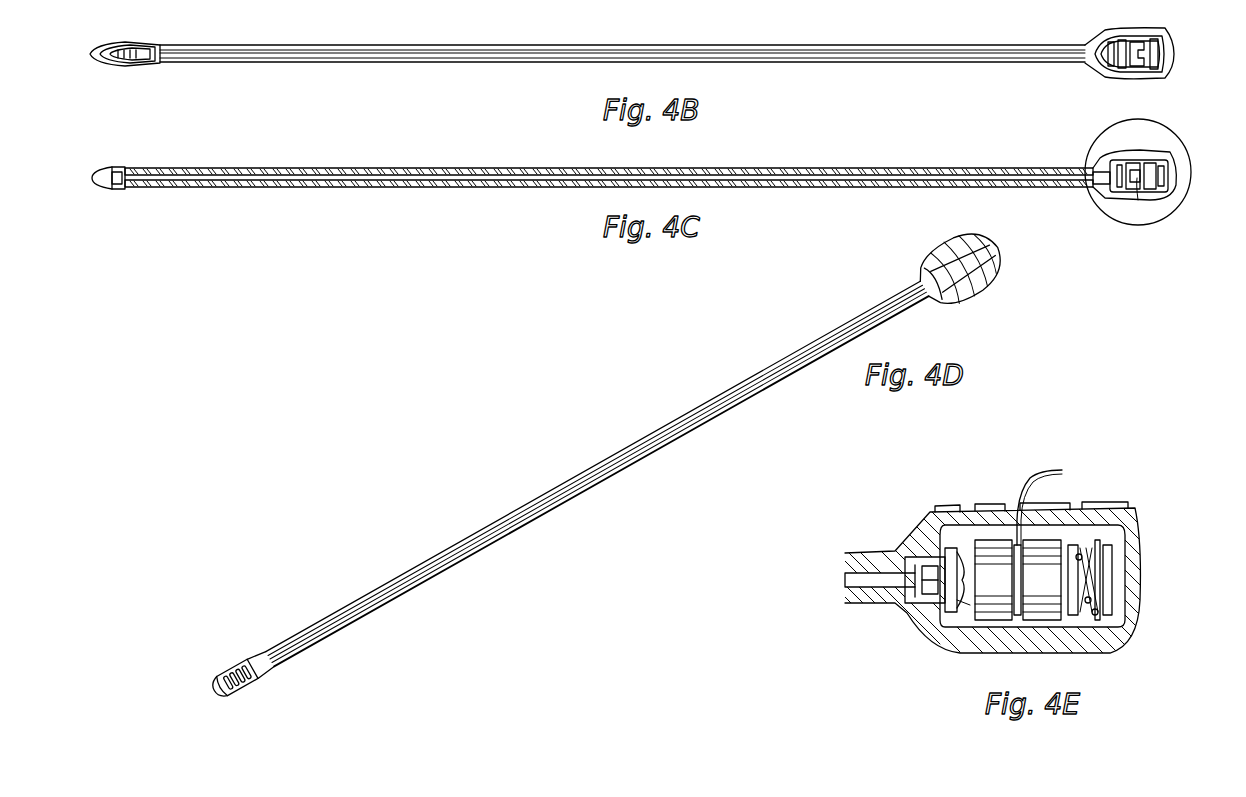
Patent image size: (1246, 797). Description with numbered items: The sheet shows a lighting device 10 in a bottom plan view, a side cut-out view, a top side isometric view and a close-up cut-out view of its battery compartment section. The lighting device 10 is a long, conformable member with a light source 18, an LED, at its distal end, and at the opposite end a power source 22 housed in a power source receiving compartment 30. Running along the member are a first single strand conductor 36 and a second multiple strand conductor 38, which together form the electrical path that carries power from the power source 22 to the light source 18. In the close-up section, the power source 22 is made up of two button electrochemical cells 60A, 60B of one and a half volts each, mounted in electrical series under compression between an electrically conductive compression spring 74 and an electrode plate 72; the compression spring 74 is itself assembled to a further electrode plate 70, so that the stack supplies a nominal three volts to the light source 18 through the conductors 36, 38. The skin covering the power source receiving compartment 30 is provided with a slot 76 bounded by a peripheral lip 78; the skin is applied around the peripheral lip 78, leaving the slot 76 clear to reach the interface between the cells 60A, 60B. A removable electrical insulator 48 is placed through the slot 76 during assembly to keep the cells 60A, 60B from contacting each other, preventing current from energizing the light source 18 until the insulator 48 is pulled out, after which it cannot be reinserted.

In FIG. 4B, the lighting device 10 is at (392, 36).
In FIG. 4C, the lighting device 10 is at (392, 150).
In FIG. 4D, the lighting device 10 is at (478, 524).
In FIG. 4B, the removable electrical insulator 48 is at (1140, 50).
In FIG. 4C, the removable electrical insulator 48 is at (1148, 148).
In FIG. 4D, the removable electrical insulator 48 is at (980, 292).
In FIG. 4E, the removable electrical insulator 48 is at (1050, 468).
In FIG. 4C, the light source 18 is at (120, 186).
In FIG. 4C, the power source 22 is at (1133, 180).
In FIG. 4E, the power source 22 is at (1054, 552).
In FIG. 4E, the power source receiving compartment 30 is at (902, 662).
In FIG. 4E, the first single strand conductor 36 is at (918, 566).
In FIG. 4E, the second multiple strand conductor 38 is at (926, 590).
In FIG. 4E, the electrode plate 72 is at (956, 612).
In FIG. 4E, the button electrochemical cell 60A is at (993, 580).
In FIG. 4E, the button electrochemical cell 60B is at (1037, 580).
In FIG. 4E, the peripheral lip 78 is at (1006, 508).
In FIG. 4E, the slot 76 is at (1040, 504).
In FIG. 4E, the electrically conductive compression spring 74 is at (1090, 560).
In FIG. 4E, the electrode plate 70 is at (1108, 570).